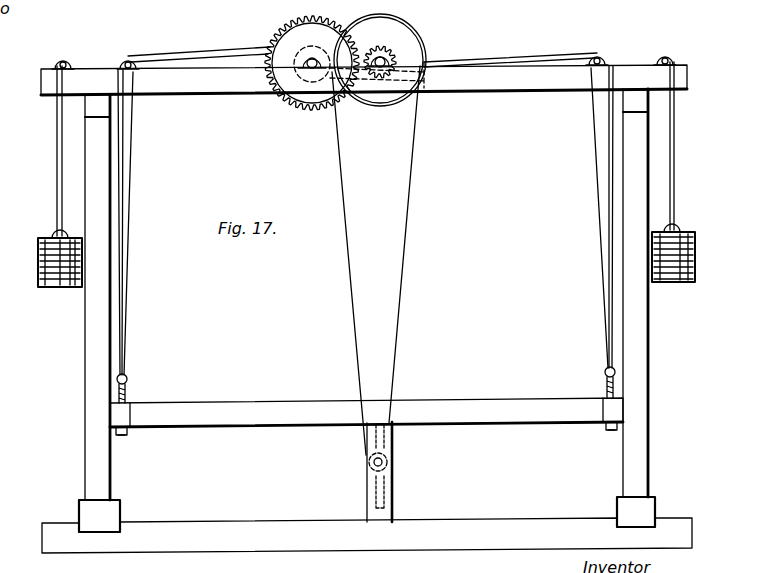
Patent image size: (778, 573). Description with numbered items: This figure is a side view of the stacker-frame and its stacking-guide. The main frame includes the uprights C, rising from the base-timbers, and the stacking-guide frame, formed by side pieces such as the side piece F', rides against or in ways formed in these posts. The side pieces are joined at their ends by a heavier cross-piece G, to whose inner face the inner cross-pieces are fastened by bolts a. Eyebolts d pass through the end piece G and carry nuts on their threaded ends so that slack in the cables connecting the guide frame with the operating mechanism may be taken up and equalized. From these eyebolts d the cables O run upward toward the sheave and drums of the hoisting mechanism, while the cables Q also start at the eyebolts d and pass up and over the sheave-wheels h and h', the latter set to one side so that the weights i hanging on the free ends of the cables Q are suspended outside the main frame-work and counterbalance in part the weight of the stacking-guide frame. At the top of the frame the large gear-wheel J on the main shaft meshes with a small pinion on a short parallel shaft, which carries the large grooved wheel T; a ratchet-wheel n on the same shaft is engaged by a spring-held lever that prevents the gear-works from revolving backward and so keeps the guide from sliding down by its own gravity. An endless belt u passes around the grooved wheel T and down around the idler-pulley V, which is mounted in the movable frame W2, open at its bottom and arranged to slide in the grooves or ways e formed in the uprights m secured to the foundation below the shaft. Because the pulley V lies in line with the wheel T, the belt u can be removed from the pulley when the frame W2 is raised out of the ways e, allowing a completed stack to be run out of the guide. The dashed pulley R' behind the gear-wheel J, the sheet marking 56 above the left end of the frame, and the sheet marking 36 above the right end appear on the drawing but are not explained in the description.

The uprights C is at (85, 330).
The side piece F' is at (366, 400).
The cross-piece G is at (126, 421).
The eyebolts d is at (129, 382).
The bolts a is at (603, 383).
The sheave-wheel h' is at (363, 49).
The sheave-wheel h is at (362, 50).
The cables Q is at (53, 173).
The cables O is at (203, 54).
The weights i is at (364, 255).
The gear-wheel J is at (300, 28).
The pulley R' is at (330, 81).
The grooved wheel T is at (410, 20).
The ratchet-wheel n is at (379, 47).
The endless belt u is at (381, 260).
The uprights m is at (364, 504).
The movable frame W2 is at (394, 488).
The grooves or ways e is at (374, 488).
The idler-pulley V is at (388, 462).
The sheet numeral 56 is at (138, 9).
The sheet numeral 36 is at (590, 7).